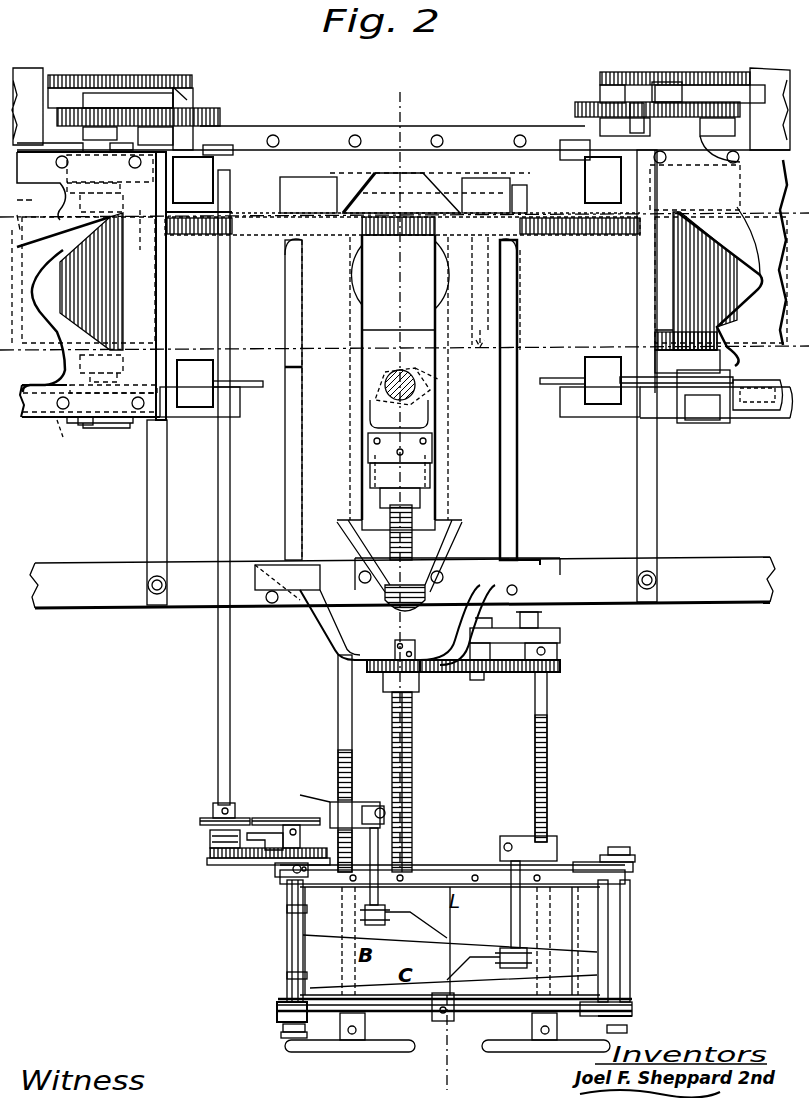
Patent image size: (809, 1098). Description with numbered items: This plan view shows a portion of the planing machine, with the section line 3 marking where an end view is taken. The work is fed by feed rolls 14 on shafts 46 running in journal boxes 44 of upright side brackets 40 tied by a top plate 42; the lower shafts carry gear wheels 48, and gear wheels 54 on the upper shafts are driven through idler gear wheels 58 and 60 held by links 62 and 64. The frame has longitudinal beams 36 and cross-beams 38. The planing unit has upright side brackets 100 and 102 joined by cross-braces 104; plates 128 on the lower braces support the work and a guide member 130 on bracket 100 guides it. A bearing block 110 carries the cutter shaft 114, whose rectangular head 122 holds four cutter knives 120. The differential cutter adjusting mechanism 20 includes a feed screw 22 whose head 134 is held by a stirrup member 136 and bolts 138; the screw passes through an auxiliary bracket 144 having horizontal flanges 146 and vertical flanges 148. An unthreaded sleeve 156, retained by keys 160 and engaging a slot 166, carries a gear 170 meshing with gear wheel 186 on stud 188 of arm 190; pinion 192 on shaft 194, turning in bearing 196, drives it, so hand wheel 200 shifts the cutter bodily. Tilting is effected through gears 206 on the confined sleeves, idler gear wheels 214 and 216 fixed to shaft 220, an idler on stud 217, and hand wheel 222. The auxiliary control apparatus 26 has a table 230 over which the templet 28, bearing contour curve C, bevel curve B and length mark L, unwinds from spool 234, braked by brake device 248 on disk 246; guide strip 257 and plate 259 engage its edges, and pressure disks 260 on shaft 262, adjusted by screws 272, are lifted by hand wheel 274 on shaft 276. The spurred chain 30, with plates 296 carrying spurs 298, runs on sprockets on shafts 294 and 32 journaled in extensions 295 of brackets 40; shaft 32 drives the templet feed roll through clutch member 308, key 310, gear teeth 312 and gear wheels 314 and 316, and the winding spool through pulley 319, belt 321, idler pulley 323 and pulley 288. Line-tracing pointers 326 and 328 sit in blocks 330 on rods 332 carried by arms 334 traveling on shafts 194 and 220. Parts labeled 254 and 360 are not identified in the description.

The section line 3 is at (355, 92).
The feed rolls 14 is at (80, 240).
The differential cutter adjusting mechanism 20 is at (423, 697).
The feed screw 22 is at (412, 750).
The auxiliary control apparatus 26 is at (277, 1012).
The movable templet 28 is at (285, 990).
The spurred chain 30 is at (213, 232).
The shaft 32 is at (218, 700).
The longitudinally disposed beams 36 is at (60, 572).
The cross-beams 38 is at (147, 518).
The upright side brackets 40 is at (63, 437).
The top plate 42 is at (58, 210).
The journal boxes 44 is at (85, 428).
The shafts 46 is at (740, 162).
The gear wheels 48 is at (700, 78).
The gear wheels 54 is at (720, 108).
The idler gear wheel 58 is at (638, 112).
The idler gear wheel 60 is at (580, 110).
The link 62 is at (665, 92).
The link 64 is at (605, 90).
The upright side bracket 100 is at (415, 147).
The upright side bracket 102 is at (520, 545).
The cross-braces 104 is at (286, 512).
The bearing block 110 is at (385, 330).
The cutter shaft 114 is at (385, 385).
The cutter knives 120 is at (428, 412).
The rectangular head 122 is at (440, 380).
The plates 128 is at (288, 300).
The guide member 130 is at (490, 252).
The head 134 is at (430, 470).
The stirrup member 136 is at (430, 455).
The bolts 138 is at (432, 437).
The auxiliary bracket 144 is at (338, 640).
The horizontal flanges 146 is at (455, 560).
The vertical flanges 148 is at (460, 592).
The unthreaded sleeves 156 is at (385, 678).
The fingers or keys 160 is at (395, 652).
The slots 166 is at (412, 765).
The gears 170 is at (367, 666).
The gear wheel 186 is at (470, 680).
The stud 188 is at (480, 672).
The arm 190 is at (540, 620).
The pinion 192 is at (560, 665).
The shaft 194 is at (547, 717).
The bearing 196 is at (560, 637).
The hand wheel 200 is at (565, 1050).
The gears 206 is at (412, 600).
The idler gear wheel 214 is at (300, 600).
The idler gear wheel 216 is at (322, 625).
The stud 217 is at (395, 520).
The shaft 220 is at (338, 743).
The hand wheel 222 is at (375, 1050).
The horizontal table 230 is at (420, 1011).
The spool 234 is at (633, 872).
The disk 246 is at (615, 847).
The brake device 248 is at (632, 855).
The post 254 is at (600, 882).
The guide strip 257 is at (455, 870).
The plate 259 is at (452, 1015).
The pressure rolls or disks 260 is at (287, 908).
The vertically movable shaft 262 is at (292, 940).
The adjusting screws 272 is at (285, 1030).
The hand wheel 274 is at (290, 1038).
The shaft 276 is at (290, 962).
The pulley 288 is at (300, 795).
The shaft 294 is at (520, 305).
The extending portions 295 is at (242, 147).
The small plates 296 is at (240, 218).
The spurs 298 is at (268, 232).
The clutch member 308 is at (210, 840).
The key 310 is at (200, 823).
The gear teeth 312 is at (215, 855).
The gear wheel 314 is at (230, 864).
The gear wheel 316 is at (280, 872).
The pulley 319 is at (213, 810).
The belt 321 is at (250, 833).
The idler pulley 323 is at (295, 825).
The line-tracing pointer 326 is at (435, 922).
The line-tracing pointer 328 is at (447, 980).
The blocks 330 is at (385, 912).
The rods 332 is at (500, 842).
The arms 334 is at (340, 802).
The bearing 360 is at (398, 237).